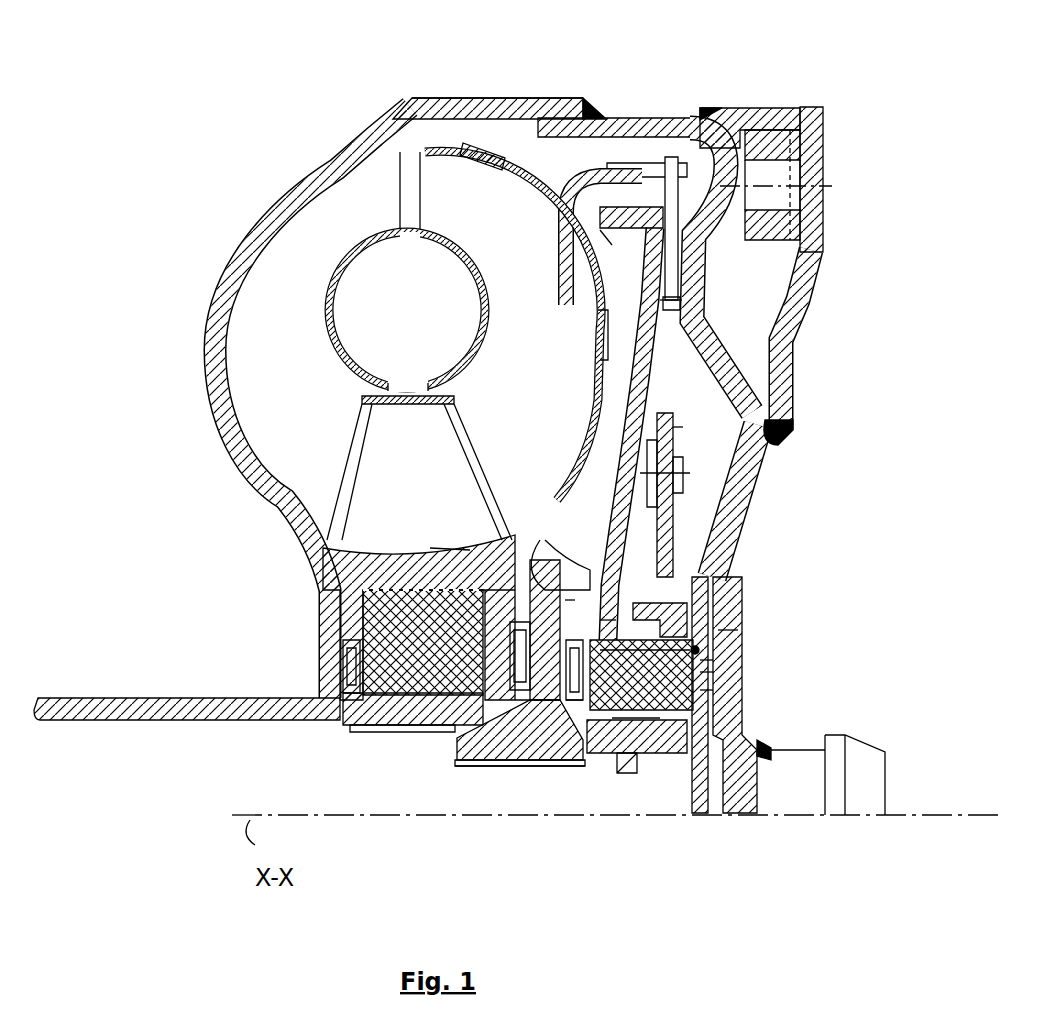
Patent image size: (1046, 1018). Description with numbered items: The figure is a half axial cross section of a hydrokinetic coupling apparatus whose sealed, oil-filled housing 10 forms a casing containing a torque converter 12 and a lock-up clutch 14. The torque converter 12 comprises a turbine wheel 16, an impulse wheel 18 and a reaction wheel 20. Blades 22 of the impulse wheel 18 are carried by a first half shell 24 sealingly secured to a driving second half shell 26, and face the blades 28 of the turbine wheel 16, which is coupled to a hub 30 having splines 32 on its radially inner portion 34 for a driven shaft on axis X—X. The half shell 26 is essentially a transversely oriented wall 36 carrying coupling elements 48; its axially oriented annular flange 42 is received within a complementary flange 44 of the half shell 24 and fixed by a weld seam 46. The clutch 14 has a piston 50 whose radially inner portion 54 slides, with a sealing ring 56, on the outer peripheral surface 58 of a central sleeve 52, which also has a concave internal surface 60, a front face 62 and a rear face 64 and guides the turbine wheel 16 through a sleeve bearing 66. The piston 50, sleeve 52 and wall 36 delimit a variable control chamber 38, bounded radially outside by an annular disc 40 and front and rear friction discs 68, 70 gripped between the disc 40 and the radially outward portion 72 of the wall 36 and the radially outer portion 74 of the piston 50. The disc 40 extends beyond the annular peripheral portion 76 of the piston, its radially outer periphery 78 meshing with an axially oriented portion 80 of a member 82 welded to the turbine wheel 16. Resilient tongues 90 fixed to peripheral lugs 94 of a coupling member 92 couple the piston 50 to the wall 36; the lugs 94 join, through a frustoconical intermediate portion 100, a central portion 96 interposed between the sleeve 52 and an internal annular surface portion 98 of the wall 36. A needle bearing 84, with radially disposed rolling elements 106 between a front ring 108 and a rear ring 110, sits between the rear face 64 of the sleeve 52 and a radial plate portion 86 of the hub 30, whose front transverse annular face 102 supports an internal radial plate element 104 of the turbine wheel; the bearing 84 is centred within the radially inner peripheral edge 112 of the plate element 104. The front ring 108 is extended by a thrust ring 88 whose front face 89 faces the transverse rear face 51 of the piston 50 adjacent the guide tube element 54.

The sealed housing 10 is at (530, 90).
The torque converter 12 is at (455, 98).
The lock-up clutch 14 is at (690, 118).
The turbine wheel 16 is at (470, 296).
The impulse wheel 18 is at (350, 275).
The reaction wheel 20 is at (340, 566).
The blades 22 is at (286, 386).
The first half shell 24 is at (230, 452).
The driving second half shell 26 is at (752, 492).
The blades 28 is at (540, 386).
The hub 30 is at (462, 770).
The splines 32 is at (498, 766).
The radially inner portion 34 is at (538, 742).
The transversely oriented wall 36 is at (730, 528).
The variable control chamber 38 is at (726, 416).
The annular disc 40 is at (745, 108).
The cover plate 42 is at (622, 118).
The axially oriented annular flange 44 is at (498, 100).
The weld seam 46 is at (598, 100).
The coupling elements 48 is at (826, 194).
The piston 50 is at (590, 325).
The transverse rear face 51 is at (590, 570).
The central annular sleeve 52 is at (640, 755).
The radially inner portion 54 is at (660, 632).
The sealing ring 56 is at (700, 662).
The outer peripheral surface 58 is at (732, 640).
The concave internal cylindrical surface 60 is at (690, 760).
The front face 62 is at (700, 674).
The rear face 64 is at (575, 745).
The sleeve bearing 66 is at (612, 760).
The front friction disc 68 is at (705, 288).
The rear friction disc 70 is at (684, 308).
The radially outward portion 72 is at (805, 262).
The radially outer portion 74 is at (596, 270).
The annular peripheral portion 76 is at (612, 240).
The radially outer periphery 78 is at (712, 108).
The axially oriented complementary portion 80 is at (662, 157).
The member 82 is at (552, 175).
The needle bearing 84 is at (560, 738).
The radial plate portion 86 is at (500, 548).
The ring 88 is at (606, 592).
The front transverse annular face 89 is at (590, 622).
The resilient tongues 90 is at (665, 430).
The coupling member 92 is at (690, 500).
The peripheral lugs 94 is at (673, 427).
The central portion 96 is at (705, 690).
The internal annular surface portion 98 is at (700, 648).
The frustoconical intermediate annular portion 100 is at (707, 555).
The front transverse annular face 102 is at (553, 540).
The internal radial plate element 104 is at (455, 562).
The rolling elements 106 is at (690, 708).
The front ring 108 is at (692, 660).
The rear ring 110 is at (430, 728).
The radially inner peripheral edge 112 is at (472, 668).